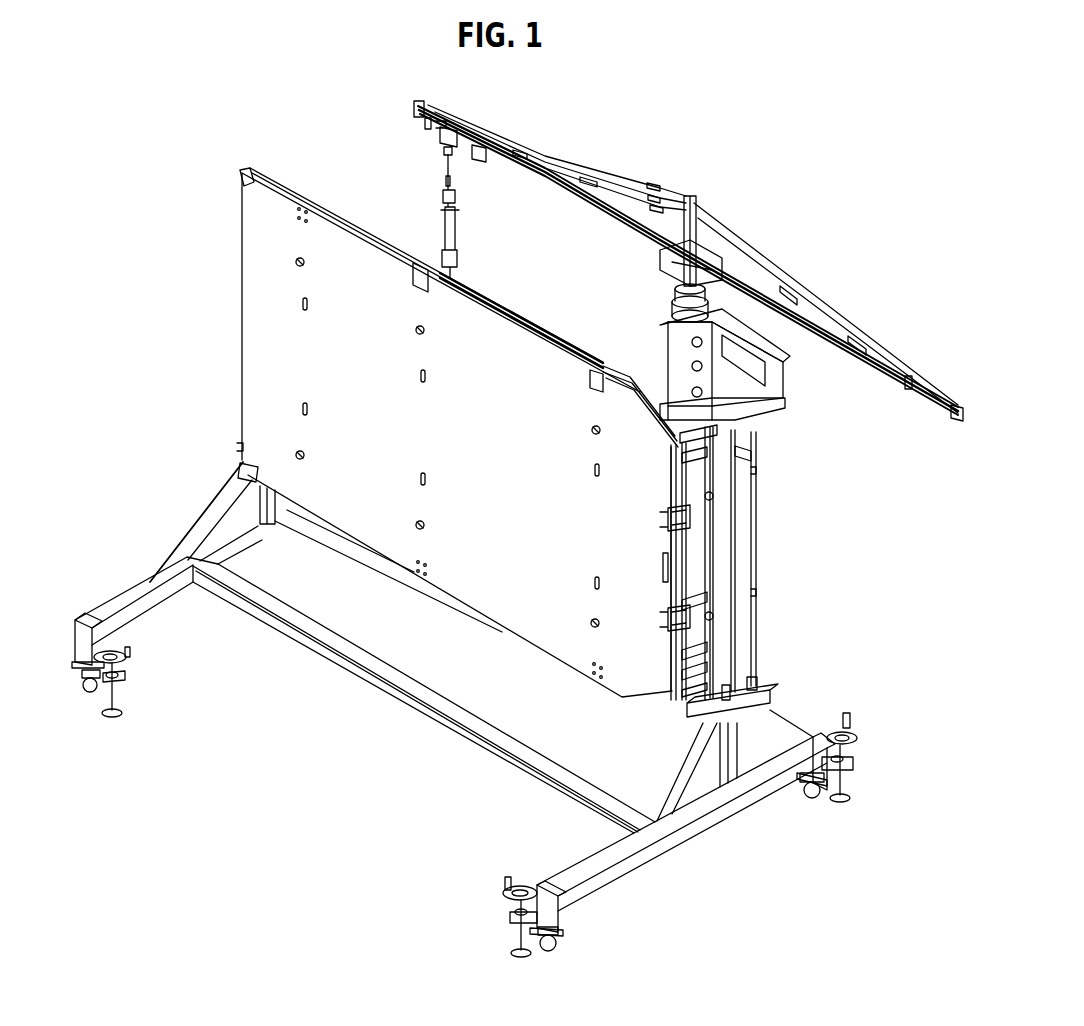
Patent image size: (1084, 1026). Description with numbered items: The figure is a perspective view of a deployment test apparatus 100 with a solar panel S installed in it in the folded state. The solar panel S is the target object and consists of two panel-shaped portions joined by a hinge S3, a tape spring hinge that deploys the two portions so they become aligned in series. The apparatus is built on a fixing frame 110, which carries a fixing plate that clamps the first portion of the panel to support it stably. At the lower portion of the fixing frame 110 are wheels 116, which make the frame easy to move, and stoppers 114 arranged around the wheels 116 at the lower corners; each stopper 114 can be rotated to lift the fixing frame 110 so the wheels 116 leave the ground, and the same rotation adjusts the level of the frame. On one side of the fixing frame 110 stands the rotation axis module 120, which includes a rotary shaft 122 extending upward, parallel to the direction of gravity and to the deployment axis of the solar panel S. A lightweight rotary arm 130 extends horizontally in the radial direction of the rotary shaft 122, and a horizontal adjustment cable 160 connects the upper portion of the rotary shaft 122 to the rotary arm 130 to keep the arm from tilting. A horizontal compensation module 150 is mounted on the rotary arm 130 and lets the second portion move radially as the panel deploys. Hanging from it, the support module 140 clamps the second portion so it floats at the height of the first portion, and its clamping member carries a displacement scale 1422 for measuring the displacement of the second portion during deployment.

The deployment test apparatus 100 is at (157, 131).
The fixing frame 110 is at (730, 797).
The stoppers 114 is at (120, 672).
The wheels 116 is at (84, 676).
The rotation axis module 120 is at (760, 397).
The rotary shaft 122 is at (720, 258).
The rotary arm 130 is at (547, 176).
The support module 140 is at (450, 221).
The displacement scale 1422 is at (533, 320).
The horizontal compensation module 150 is at (440, 140).
The horizontal adjustment cable 160 is at (738, 248).
The solar panel S is at (258, 255).
The hinge S3 is at (692, 518).